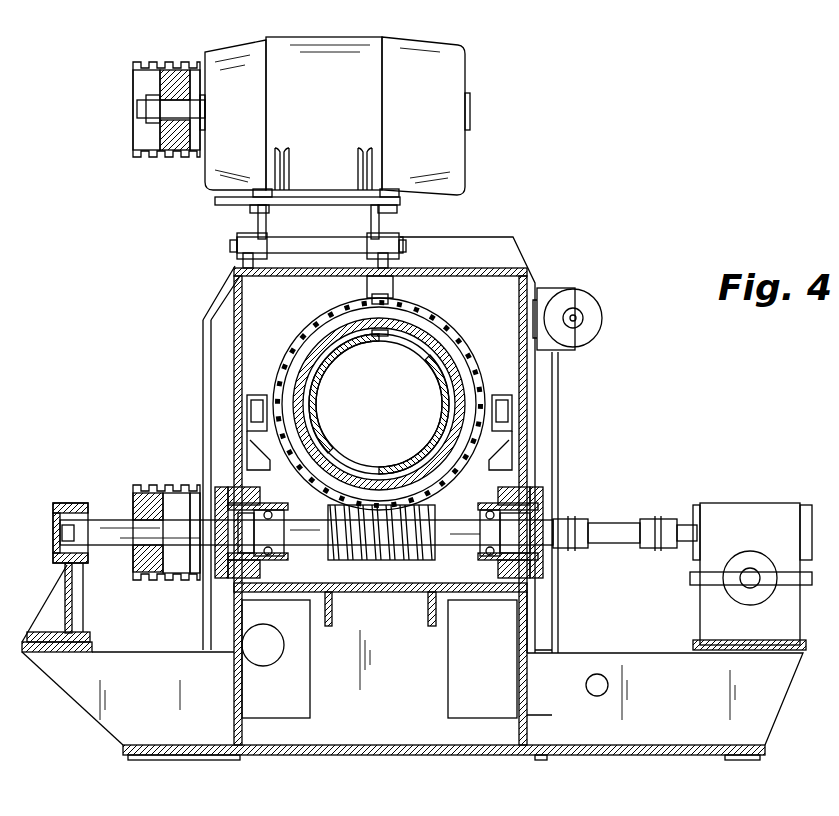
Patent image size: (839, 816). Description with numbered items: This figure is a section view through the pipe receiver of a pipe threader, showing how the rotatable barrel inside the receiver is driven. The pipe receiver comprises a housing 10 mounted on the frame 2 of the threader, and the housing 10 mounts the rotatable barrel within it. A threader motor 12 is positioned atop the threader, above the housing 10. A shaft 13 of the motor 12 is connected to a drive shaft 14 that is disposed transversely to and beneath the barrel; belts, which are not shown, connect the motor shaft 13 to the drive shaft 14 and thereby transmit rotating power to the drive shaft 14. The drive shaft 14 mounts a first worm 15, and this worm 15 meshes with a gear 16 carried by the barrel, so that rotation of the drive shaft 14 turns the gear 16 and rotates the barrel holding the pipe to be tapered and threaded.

The frame 2 is at (775, 715).
The housing 10 is at (210, 325).
The threader motor 12 is at (467, 160).
The shaft 13 is at (145, 120).
The drive shaft 14 is at (118, 525).
The first worm 15 is at (430, 555).
The gear 16 is at (460, 355).